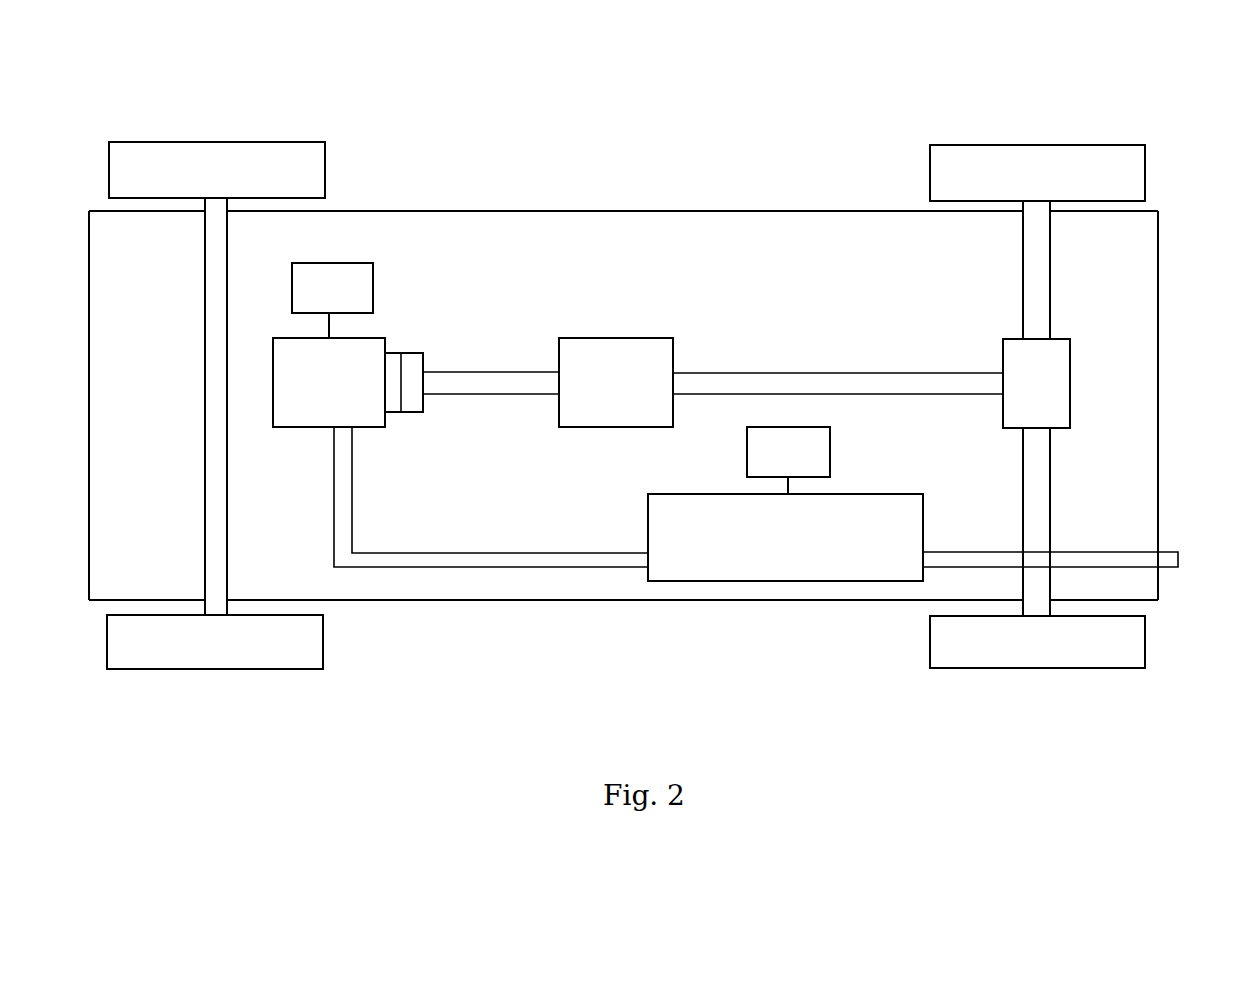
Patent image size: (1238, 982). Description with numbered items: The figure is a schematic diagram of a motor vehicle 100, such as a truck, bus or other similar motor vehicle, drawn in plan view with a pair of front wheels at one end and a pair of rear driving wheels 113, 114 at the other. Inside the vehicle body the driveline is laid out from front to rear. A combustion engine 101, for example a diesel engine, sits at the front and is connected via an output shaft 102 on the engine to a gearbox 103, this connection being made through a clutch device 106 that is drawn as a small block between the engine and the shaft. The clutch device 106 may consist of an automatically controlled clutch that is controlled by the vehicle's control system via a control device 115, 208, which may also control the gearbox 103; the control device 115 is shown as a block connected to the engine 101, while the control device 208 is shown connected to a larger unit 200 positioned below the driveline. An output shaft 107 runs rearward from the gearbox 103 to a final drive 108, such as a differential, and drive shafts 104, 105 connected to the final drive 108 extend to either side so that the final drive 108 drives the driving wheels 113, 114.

The motor vehicle 100 is at (623, 311).
The combustion engine 101 is at (302, 415).
The output shaft 102 is at (397, 367).
The gearbox 103 is at (618, 348).
The drive shaft 104 is at (1040, 267).
The drive shaft 105 is at (1043, 527).
The clutch device 106 is at (413, 402).
The output shaft 107 is at (925, 387).
The final drive 108 is at (1065, 377).
The driving wheel 113 is at (1140, 163).
The driving wheel 114 is at (1138, 642).
The control device 115 is at (333, 297).
The control device 200 is at (803, 573).
The control device 208 is at (788, 460).